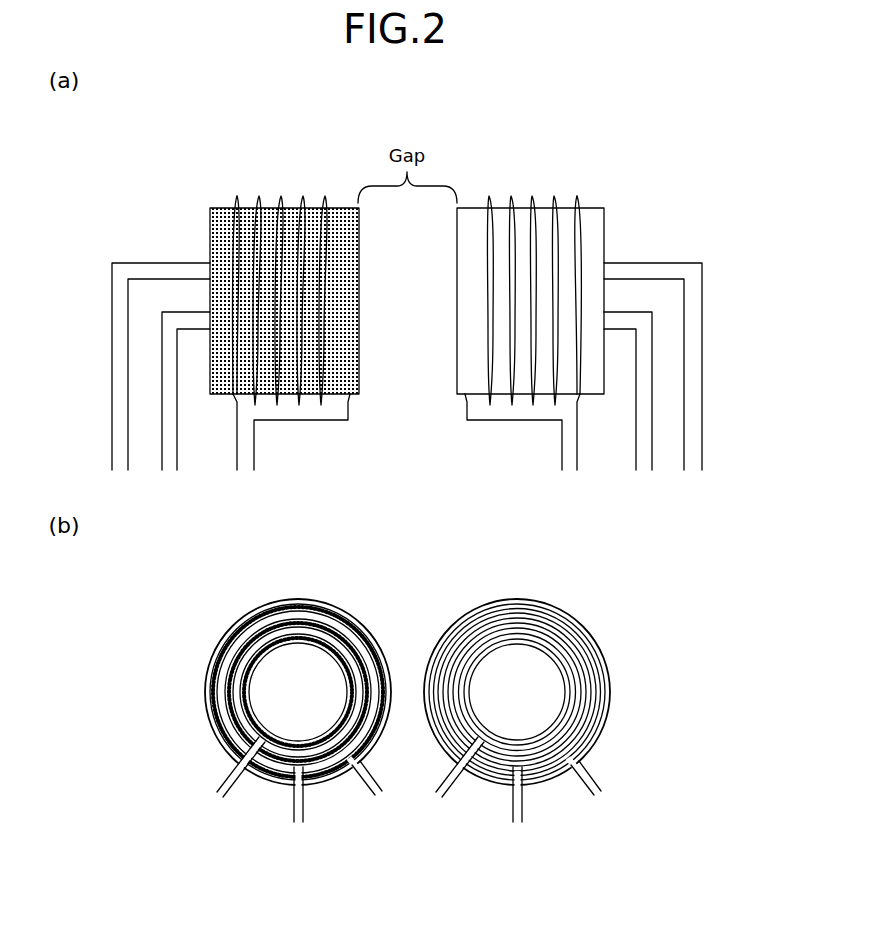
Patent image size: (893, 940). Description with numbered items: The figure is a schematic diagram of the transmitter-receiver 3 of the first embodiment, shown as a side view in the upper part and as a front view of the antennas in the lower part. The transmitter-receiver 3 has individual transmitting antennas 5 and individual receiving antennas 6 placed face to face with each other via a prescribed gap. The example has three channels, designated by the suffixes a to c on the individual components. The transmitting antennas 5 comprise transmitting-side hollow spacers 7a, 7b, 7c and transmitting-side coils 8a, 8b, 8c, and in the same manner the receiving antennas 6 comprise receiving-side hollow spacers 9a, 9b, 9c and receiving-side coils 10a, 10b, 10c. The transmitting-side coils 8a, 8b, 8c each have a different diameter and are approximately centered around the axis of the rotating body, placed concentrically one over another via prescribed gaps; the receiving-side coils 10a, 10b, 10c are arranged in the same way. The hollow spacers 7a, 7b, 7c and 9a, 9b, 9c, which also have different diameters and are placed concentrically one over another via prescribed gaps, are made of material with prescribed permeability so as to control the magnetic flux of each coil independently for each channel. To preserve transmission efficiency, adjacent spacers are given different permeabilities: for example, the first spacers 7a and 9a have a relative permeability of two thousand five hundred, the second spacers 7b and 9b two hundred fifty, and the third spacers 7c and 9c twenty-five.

The transmitter-receiver 3 is at (210, 130).
The transmitting antenna 5 is at (290, 188).
The receiving antenna 6 is at (543, 188).
The first transmitting-side hollow spacer 7a is at (210, 223).
The second transmitting-side hollow spacer 7b is at (230, 677).
The third transmitting-side hollow spacer 7c is at (247, 708).
The first transmitting-side coil 8a is at (237, 440).
The second transmitting-side coil 8b is at (162, 375).
The third transmitting-side coil 8c is at (112, 303).
The first receiving-side hollow spacer 9a is at (604, 223).
The second receiving-side hollow spacer 9b is at (583, 675).
The third receiving-side hollow spacer 9c is at (567, 706).
The first receiving-side coil 10a is at (577, 440).
The second receiving-side coil 10b is at (652, 373).
The third receiving-side coil 10c is at (703, 303).